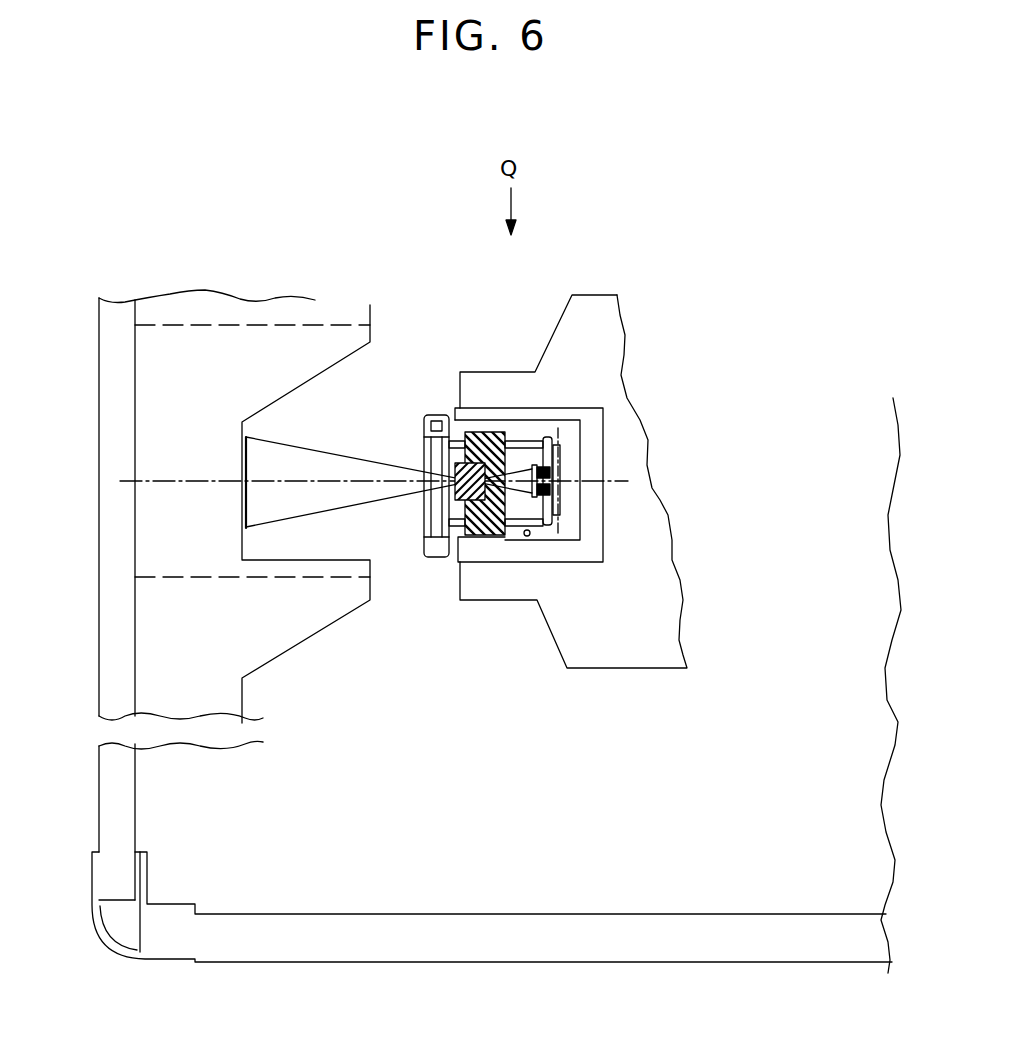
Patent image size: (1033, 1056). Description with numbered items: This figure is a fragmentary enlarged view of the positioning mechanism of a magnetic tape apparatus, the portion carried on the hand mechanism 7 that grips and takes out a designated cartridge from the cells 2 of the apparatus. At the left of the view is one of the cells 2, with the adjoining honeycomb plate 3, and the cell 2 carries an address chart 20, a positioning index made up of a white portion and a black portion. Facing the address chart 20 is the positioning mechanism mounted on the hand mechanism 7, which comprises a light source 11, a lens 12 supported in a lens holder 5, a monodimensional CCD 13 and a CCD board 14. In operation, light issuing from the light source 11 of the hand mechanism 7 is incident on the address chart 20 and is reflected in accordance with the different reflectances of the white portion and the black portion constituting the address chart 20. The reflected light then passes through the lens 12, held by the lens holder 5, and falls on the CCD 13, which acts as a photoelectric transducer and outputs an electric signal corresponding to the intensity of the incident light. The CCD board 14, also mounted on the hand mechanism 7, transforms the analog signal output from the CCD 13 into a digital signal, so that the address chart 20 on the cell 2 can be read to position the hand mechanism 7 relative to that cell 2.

The cell 2 is at (192, 361).
The honeycomb plate 3 is at (115, 517).
The lens holder 5 is at (483, 458).
The hand mechanism 7 is at (640, 518).
The light source 11 is at (435, 413).
The lens 12 is at (476, 552).
The monodimensional CCD 13 is at (533, 508).
The CCD board 14 is at (557, 450).
The address chart 20 is at (246, 515).